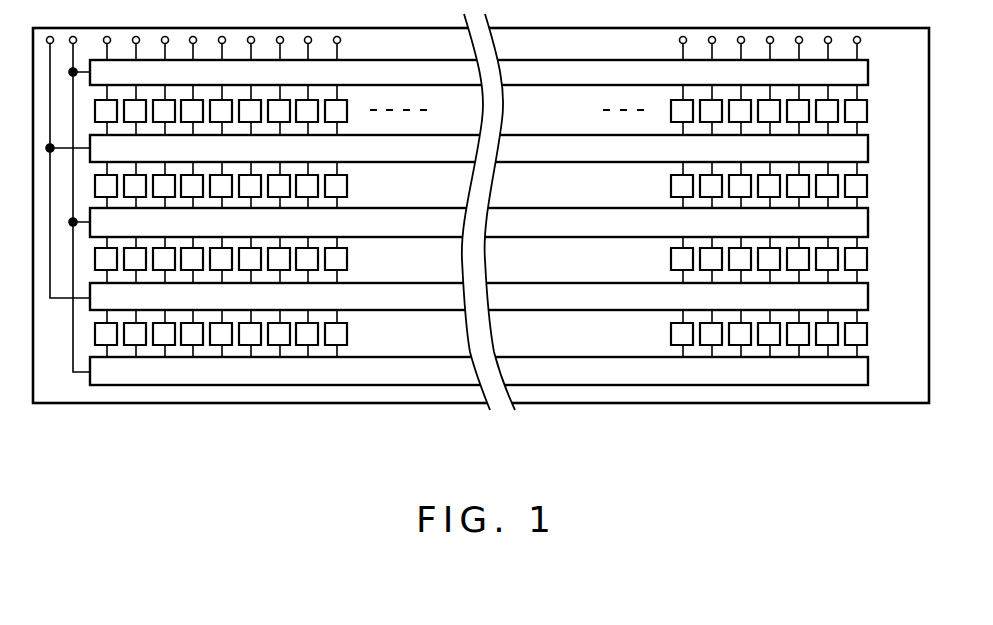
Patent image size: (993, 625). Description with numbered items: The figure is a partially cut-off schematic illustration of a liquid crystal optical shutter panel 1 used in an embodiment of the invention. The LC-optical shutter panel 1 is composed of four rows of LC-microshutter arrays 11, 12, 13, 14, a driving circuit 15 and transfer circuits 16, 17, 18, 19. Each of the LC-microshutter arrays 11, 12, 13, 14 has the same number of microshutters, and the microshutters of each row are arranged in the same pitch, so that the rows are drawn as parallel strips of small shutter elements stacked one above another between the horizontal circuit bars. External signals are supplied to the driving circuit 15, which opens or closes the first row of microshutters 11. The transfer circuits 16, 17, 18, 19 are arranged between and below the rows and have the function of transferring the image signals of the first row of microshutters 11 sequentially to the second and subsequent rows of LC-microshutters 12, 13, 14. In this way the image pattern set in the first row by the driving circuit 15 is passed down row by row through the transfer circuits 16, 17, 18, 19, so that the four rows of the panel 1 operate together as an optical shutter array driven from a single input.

The liquid crystal optical shutter panel 1 is at (106, 403).
The first row of LC-microshutters 11 is at (868, 110).
The second row of LC-microshutters 12 is at (868, 185).
The third row of LC-microshutters 13 is at (868, 258).
The fourth row of LC-microshutters 14 is at (868, 333).
The driving circuit 15 is at (868, 66).
The transfer circuit 16 is at (868, 150).
The transfer circuit 17 is at (868, 222).
The transfer circuit 18 is at (868, 295).
The transfer circuit 19 is at (868, 370).